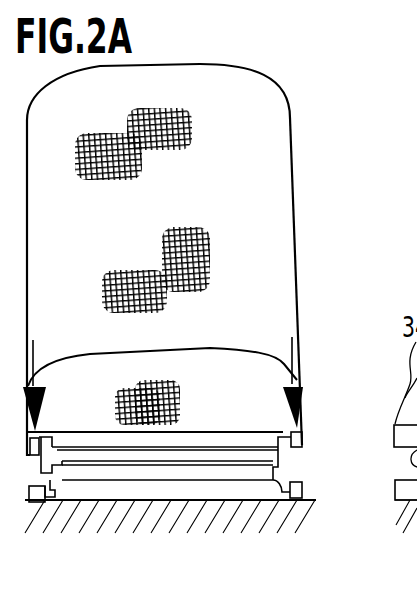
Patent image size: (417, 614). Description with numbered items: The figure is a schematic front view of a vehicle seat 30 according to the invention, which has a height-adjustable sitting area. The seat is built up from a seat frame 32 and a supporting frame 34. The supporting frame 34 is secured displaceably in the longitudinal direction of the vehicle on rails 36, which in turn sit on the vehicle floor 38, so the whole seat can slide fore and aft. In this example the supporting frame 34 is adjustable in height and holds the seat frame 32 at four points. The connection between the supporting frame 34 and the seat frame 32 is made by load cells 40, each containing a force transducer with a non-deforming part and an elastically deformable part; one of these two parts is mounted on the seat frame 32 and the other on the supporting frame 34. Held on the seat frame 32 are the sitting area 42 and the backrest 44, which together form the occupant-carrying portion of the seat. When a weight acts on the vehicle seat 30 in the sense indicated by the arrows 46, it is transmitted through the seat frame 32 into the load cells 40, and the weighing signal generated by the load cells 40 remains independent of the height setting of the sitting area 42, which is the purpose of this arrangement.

The vehicle seat 30 is at (338, 152).
The backrest 44 is at (322, 230).
The sitting area 42 is at (241, 318).
The arrows 46 is at (300, 345).
The seat frame 32 is at (305, 435).
The supporting frame 34 is at (62, 483).
The rails 36 is at (38, 500).
The vehicle floor 38 is at (200, 514).
The load cells 40 is at (293, 452).